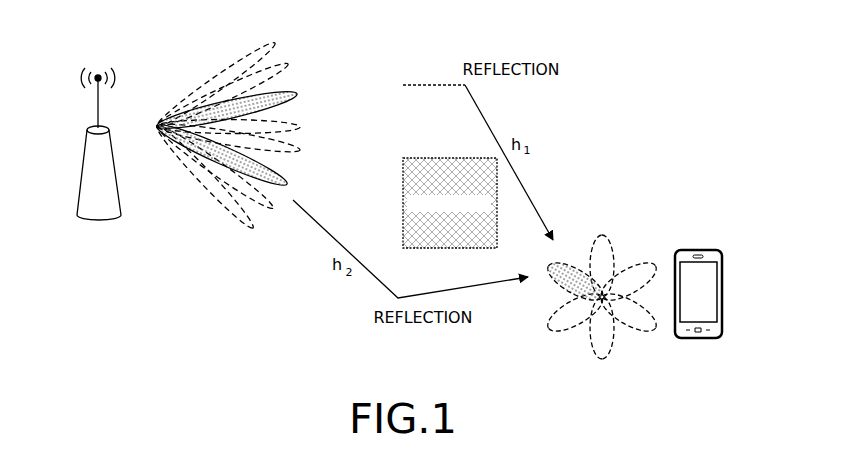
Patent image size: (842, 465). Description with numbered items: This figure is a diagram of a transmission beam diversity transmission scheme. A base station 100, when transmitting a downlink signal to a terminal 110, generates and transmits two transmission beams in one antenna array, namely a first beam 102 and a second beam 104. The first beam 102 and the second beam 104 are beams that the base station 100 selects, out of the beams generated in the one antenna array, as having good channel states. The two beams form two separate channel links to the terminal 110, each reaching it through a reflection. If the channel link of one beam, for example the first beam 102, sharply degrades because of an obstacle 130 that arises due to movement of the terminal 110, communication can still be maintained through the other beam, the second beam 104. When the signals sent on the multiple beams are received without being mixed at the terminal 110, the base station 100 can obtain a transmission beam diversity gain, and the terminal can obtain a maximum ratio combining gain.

The base station 100 is at (80, 170).
The first beam 102 is at (298, 94).
The second beam 104 is at (290, 165).
The terminal 110 is at (723, 293).
The obstacle 130 is at (449, 158).